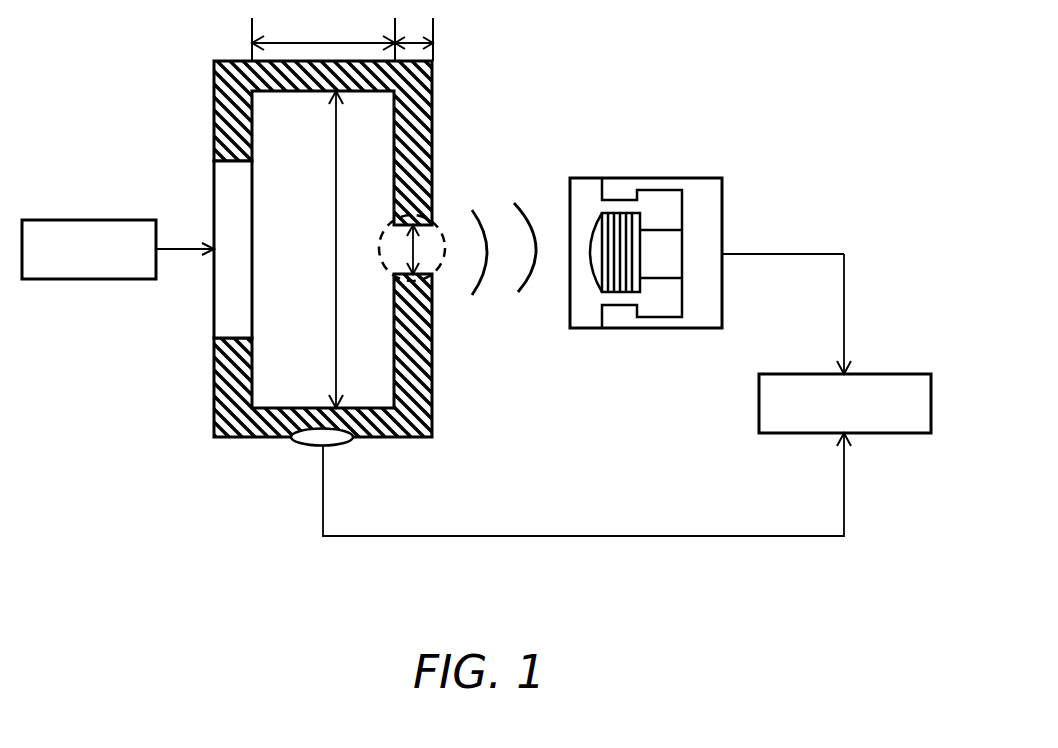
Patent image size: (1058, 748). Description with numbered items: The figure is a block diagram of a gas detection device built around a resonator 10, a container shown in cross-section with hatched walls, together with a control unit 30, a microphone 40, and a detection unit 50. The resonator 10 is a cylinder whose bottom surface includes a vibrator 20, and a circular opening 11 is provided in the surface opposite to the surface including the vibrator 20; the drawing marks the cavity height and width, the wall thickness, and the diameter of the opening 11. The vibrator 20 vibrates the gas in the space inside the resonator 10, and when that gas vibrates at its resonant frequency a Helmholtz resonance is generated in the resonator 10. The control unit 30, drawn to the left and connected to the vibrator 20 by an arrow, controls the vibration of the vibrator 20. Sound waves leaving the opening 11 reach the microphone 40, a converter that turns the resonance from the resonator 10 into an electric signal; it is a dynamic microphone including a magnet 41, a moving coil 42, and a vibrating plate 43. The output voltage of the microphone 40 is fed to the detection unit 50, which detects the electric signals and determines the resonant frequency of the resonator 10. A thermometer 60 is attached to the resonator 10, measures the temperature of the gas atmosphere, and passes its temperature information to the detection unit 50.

The resonator 10 is at (433, 100).
The opening 11 is at (440, 277).
The vibrator 20 is at (253, 217).
The control unit 30 is at (78, 219).
The microphone 40 is at (703, 278).
The magnet 41 is at (665, 277).
The moving coil 42 is at (630, 292).
The vibrating plate 43 is at (595, 287).
The detection unit 50 is at (870, 374).
The thermometer 60 is at (343, 443).